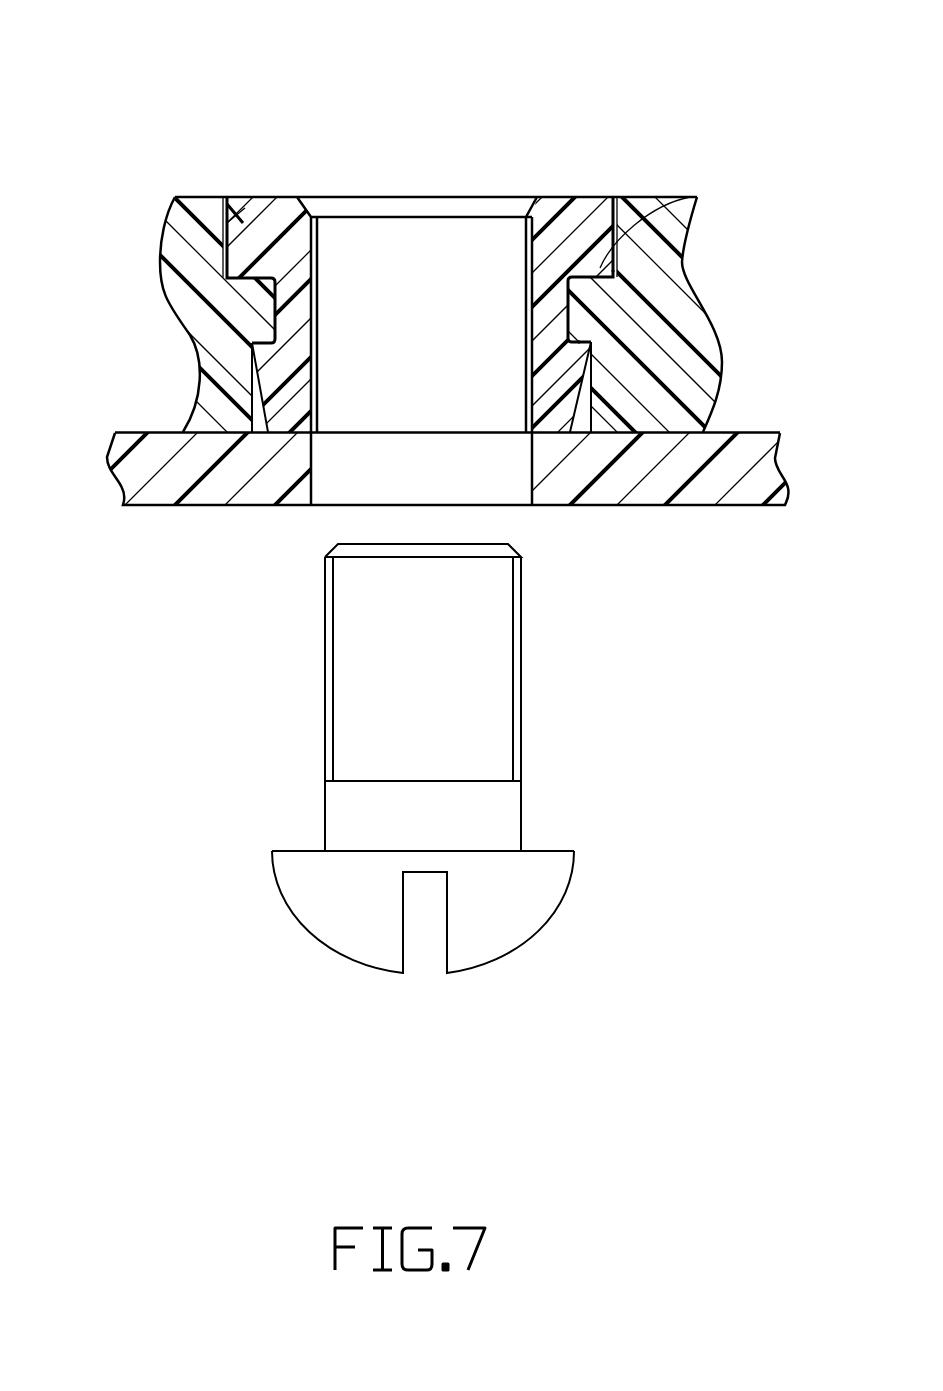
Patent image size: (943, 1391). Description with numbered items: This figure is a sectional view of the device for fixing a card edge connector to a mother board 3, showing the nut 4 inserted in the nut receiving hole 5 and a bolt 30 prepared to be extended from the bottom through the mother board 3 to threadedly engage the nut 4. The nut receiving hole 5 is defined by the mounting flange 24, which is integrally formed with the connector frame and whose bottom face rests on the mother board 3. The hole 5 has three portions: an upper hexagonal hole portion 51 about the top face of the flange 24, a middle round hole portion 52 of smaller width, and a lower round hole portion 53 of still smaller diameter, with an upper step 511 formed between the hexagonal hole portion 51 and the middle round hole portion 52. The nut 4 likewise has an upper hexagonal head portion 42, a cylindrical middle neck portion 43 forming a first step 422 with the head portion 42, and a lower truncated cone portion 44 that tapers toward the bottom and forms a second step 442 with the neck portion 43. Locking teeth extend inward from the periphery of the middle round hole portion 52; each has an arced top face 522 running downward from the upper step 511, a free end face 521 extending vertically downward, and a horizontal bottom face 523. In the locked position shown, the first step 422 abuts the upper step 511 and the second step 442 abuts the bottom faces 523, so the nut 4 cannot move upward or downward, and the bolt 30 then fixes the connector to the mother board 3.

The mother board 3 is at (602, 488).
The bolt 30 is at (516, 806).
The nut 4 is at (257, 197).
The mounting flange 24 is at (188, 226).
The head portion 42 is at (228, 197).
The neck portion 43 is at (275, 306).
The truncated cone portion 44 is at (253, 390).
The second step 442 is at (225, 315).
The first step 422 is at (268, 277).
The upper step 511 is at (249, 277).
The nut receiving hole 5 is at (614, 197).
The hexagonal hole portion 51 is at (618, 212).
The middle round hole portion 52 is at (697, 199).
The arced top face 522 is at (605, 264).
The free end face 521 is at (575, 309).
The bottom face 523 is at (590, 342).
The lower round hole portion 53 is at (585, 414).